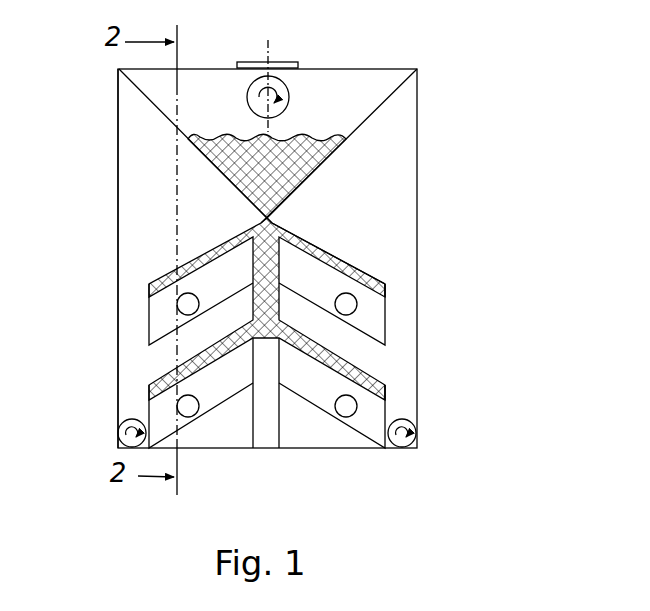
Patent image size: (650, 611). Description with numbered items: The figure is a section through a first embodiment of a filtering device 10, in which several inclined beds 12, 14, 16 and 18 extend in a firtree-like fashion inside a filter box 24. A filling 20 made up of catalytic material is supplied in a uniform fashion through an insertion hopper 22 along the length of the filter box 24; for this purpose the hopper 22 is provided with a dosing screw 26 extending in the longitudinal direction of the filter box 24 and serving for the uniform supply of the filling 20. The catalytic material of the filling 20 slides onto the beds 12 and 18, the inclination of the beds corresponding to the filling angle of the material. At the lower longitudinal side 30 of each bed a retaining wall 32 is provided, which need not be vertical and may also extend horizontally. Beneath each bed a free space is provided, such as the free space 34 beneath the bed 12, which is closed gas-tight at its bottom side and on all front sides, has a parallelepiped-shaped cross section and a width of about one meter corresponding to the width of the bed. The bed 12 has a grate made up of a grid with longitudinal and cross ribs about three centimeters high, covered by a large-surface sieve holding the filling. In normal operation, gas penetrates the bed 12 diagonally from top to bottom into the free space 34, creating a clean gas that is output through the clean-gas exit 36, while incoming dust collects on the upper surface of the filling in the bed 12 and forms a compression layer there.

The filtering device 10 is at (460, 83).
The inclined bed 12 is at (363, 267).
The inclined bed 14 is at (363, 370).
The inclined bed 16 is at (172, 268).
The inclined bed 18 is at (172, 369).
The filling 20 is at (314, 178).
The insertion hopper 22 is at (388, 97).
The filter box 24 is at (117, 155).
The dosing screw 26 is at (258, 84).
The lower longitudinal side 30 is at (388, 290).
The retaining wall 32 is at (387, 397).
The free space 34 is at (325, 281).
The clean-gas exit 36 is at (352, 305).